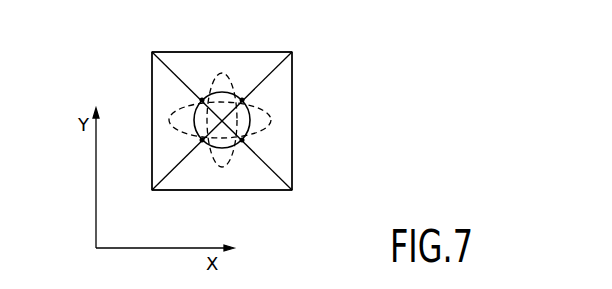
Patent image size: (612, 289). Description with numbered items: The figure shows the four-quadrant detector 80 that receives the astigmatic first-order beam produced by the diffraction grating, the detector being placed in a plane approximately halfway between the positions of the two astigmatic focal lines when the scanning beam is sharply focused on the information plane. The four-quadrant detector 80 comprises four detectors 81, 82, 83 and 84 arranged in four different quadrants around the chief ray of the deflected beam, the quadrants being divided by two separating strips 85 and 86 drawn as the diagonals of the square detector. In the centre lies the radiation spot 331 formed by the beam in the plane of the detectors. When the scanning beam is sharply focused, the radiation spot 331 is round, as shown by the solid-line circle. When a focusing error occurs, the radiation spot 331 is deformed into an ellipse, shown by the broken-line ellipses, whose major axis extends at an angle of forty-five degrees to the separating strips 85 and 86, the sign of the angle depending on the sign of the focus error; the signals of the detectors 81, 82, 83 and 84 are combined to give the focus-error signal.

The four-quadrant detector 80 is at (358, 79).
The detector 81 is at (260, 65).
The detector 82 is at (165, 90).
The detector 83 is at (187, 182).
The detector 84 is at (283, 163).
The separating strip 85 is at (282, 60).
The separating strip 86 is at (276, 178).
The radiation spot 331 is at (246, 121).